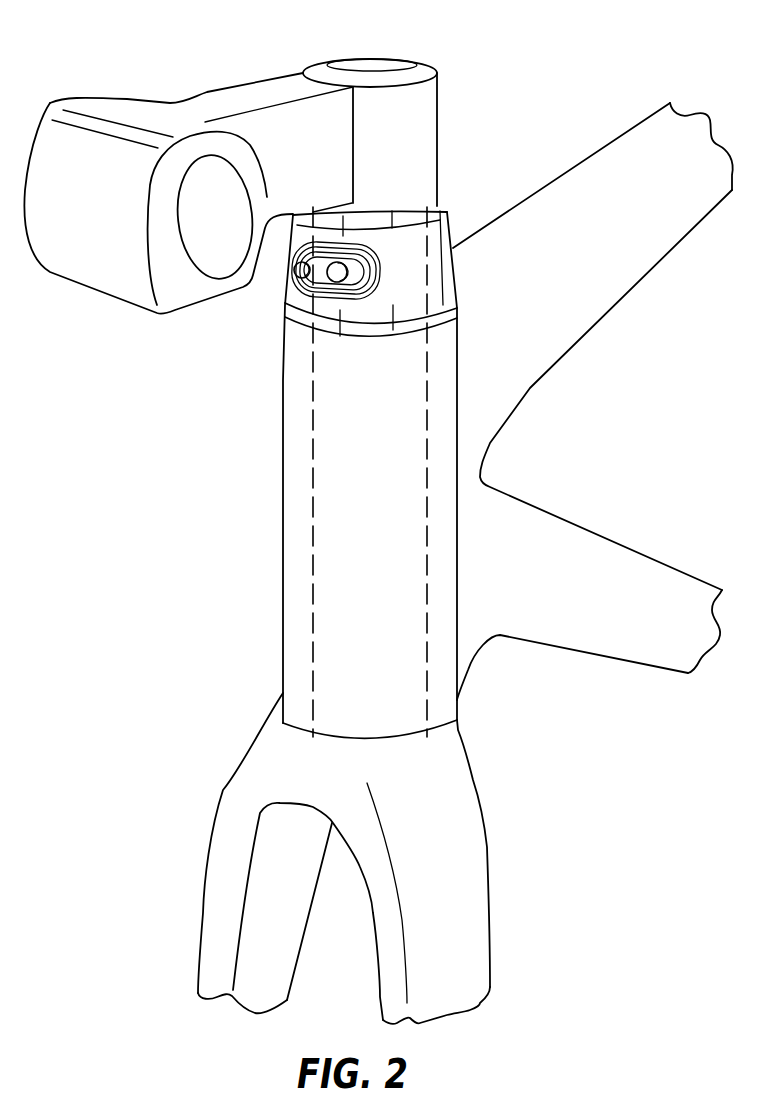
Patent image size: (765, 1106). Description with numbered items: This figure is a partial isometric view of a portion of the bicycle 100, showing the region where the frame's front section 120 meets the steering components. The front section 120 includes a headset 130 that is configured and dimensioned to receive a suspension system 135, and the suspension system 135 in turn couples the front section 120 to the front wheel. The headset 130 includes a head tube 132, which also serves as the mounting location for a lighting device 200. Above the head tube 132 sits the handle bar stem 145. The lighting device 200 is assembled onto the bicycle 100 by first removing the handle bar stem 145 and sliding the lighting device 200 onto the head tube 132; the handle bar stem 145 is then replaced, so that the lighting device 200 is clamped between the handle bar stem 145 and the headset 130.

The bicycle 100 is at (580, 38).
The front section 120 is at (653, 262).
The headset 130 is at (283, 482).
The head tube 132 is at (313, 577).
The suspension system 135 is at (475, 877).
The handle bar stem 145 is at (102, 97).
The lighting device 200 is at (288, 293).